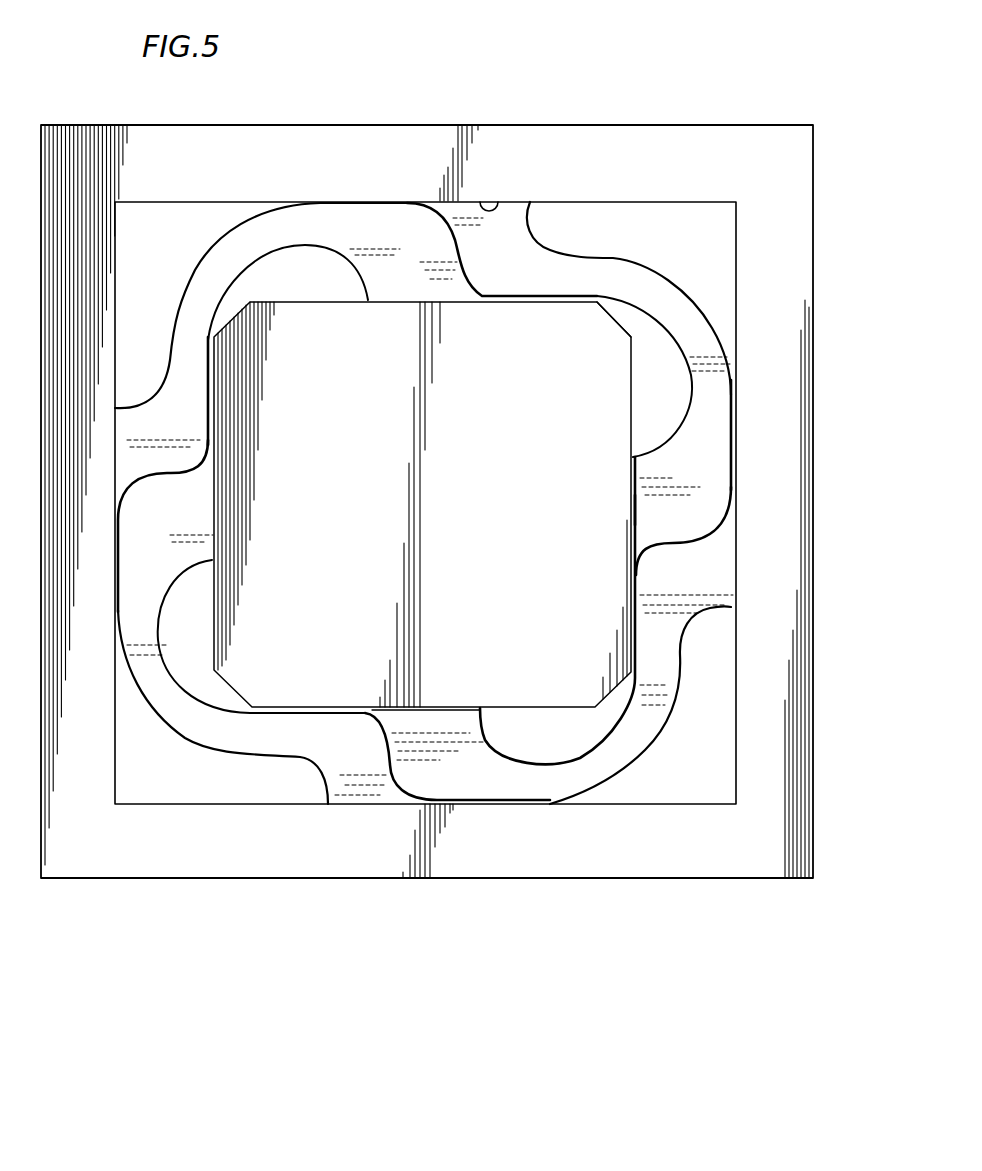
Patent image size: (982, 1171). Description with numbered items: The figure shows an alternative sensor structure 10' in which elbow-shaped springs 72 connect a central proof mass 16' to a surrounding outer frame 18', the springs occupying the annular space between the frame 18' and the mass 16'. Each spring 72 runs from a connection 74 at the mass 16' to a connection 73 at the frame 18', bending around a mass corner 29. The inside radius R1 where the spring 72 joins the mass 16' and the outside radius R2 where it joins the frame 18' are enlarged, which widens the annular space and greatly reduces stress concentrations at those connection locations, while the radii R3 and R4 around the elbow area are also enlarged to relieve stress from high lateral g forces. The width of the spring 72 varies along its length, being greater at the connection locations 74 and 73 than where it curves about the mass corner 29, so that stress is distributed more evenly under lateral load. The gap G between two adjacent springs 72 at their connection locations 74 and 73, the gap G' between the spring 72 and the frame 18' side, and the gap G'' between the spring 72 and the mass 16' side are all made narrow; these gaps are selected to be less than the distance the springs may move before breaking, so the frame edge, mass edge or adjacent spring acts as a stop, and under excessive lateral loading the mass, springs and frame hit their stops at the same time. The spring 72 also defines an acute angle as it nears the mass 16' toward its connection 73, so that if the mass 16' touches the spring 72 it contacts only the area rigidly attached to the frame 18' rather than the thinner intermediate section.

The sensor structure 10' is at (427, 553).
The proof mass 16' is at (425, 572).
The frame 18' is at (491, 503).
The mass corner 29 is at (628, 327).
The spring 72 is at (185, 270).
The connection at frame 73 is at (494, 203).
The connection at mass 74 is at (622, 508).
The inside radius R1 is at (633, 400).
The outside radius R2 is at (545, 238).
The elbow radius R3 is at (683, 370).
The elbow radius R4 is at (693, 307).
The gap between adjacent springs G is at (669, 559).
The gap between spring and frame G' is at (747, 469).
The gap between spring and mass G'' is at (502, 315).